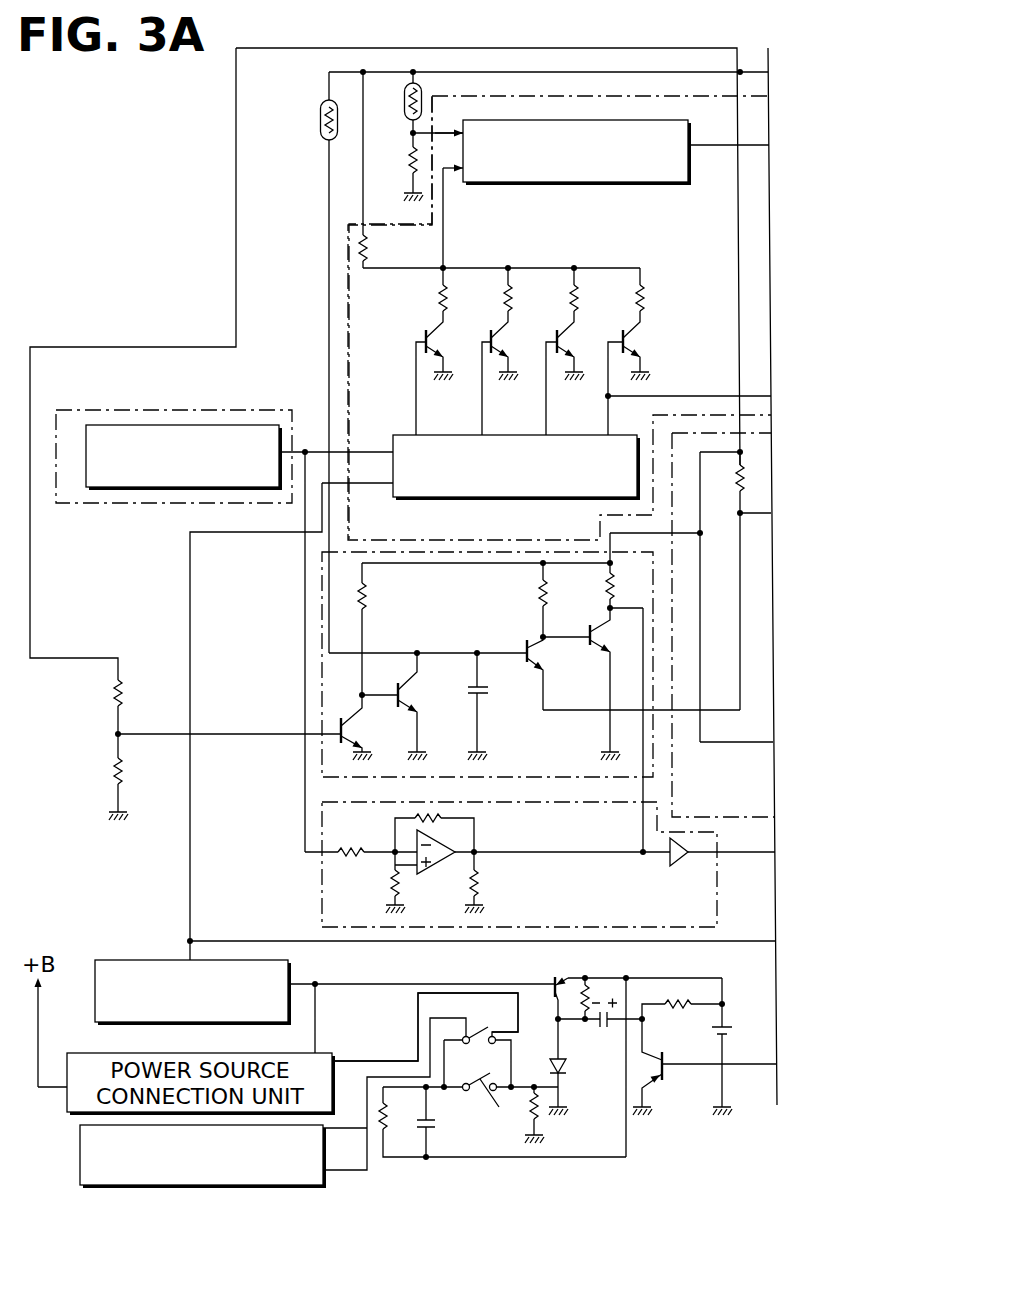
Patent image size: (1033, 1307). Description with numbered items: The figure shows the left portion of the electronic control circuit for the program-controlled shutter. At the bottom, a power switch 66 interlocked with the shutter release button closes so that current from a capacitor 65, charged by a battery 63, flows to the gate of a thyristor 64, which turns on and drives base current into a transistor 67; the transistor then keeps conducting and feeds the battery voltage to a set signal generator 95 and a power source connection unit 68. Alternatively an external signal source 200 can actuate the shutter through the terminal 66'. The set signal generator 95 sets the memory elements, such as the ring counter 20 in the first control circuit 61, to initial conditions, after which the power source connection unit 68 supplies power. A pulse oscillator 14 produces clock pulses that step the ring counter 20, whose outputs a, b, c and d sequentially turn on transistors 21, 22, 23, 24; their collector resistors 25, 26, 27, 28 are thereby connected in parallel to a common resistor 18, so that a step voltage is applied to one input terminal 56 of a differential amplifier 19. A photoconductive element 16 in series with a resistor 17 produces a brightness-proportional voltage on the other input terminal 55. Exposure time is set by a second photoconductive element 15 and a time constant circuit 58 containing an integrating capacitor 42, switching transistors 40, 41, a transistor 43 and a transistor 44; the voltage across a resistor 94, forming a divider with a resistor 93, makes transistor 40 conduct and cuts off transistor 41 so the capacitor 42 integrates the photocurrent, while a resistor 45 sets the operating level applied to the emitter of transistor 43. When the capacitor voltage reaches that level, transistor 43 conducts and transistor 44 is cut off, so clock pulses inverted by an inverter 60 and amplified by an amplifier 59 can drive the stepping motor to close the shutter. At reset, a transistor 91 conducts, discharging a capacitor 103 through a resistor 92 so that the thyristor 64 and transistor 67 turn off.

The pulse oscillator 14 is at (197, 425).
The photoconductive element 15 is at (320, 108).
The photoconductive element 16 is at (405, 100).
The resistor 17 is at (407, 152).
The common resistor 18 is at (370, 250).
The differential amplifier 19 is at (588, 183).
The ring counter 20 is at (430, 432).
The transistor 21 is at (436, 335).
The transistor 22 is at (500, 335).
The transistor 23 is at (566, 335).
The transistor 24 is at (632, 335).
The collector resistor 25 is at (438, 296).
The collector resistor 26 is at (503, 293).
The collector resistor 27 is at (569, 293).
The collector resistor 28 is at (635, 293).
The switching transistor 40 is at (352, 735).
The switching transistor 41 is at (408, 688).
The integrating capacitor 42 is at (490, 690).
The transistor 43 is at (548, 655).
The transistor 44 is at (608, 622).
The resistor 45 is at (738, 480).
The input terminal 55 is at (465, 122).
The input terminal 56 is at (465, 178).
The time constant circuit 58 is at (322, 680).
The amplifier 59 is at (681, 866).
The inverter 60 is at (438, 870).
The first control circuit 61 is at (348, 357).
The battery 63 is at (735, 1027).
The thyristor 64 is at (562, 1080).
The capacitor 65 is at (437, 1125).
The power switch 66 is at (491, 1106).
The terminal 66' is at (490, 1022).
The transistor 67 is at (560, 985).
The power source connection unit 68 is at (340, 1058).
The transistor 91 is at (652, 1082).
The resistor 92 is at (676, 1012).
The resistor 93 is at (112, 690).
The resistor 94 is at (112, 770).
The set signal generator 95 is at (148, 960).
The capacitor 103 is at (603, 1030).
The external signal source 200 is at (240, 1185).